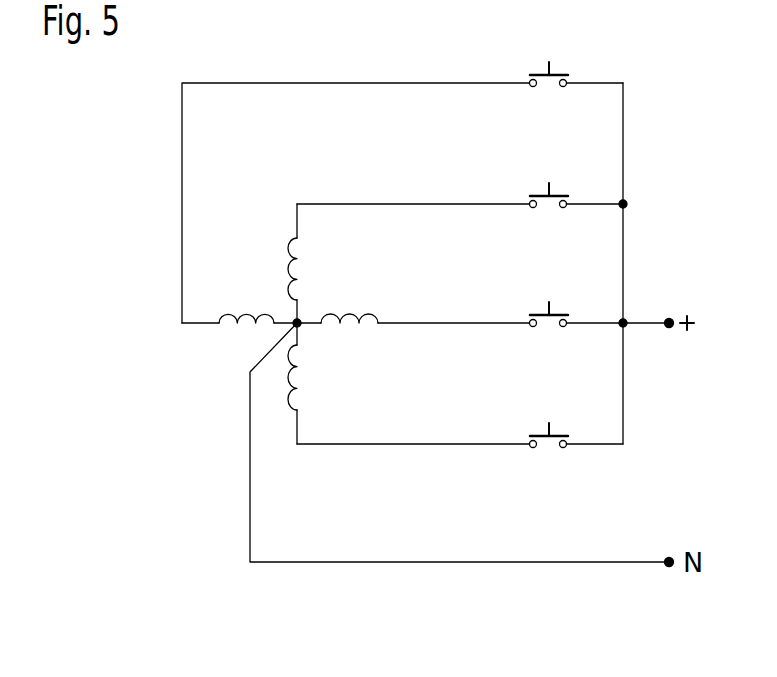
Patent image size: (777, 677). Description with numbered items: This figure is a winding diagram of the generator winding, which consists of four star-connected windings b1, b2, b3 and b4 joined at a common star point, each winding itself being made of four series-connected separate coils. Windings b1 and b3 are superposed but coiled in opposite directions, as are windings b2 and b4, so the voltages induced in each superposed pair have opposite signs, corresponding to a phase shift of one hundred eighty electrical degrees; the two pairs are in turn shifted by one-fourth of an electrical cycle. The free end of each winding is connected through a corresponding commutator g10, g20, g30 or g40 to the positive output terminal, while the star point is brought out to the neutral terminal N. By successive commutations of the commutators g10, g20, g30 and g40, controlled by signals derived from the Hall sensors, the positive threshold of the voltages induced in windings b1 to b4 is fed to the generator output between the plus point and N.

The commutator g10 is at (577, 56).
The commutator g20 is at (577, 180).
The commutator g30 is at (577, 298).
The commutator g40 is at (577, 420).
The star-connected winding b1 is at (246, 304).
The star-connected winding b2 is at (310, 269).
The star-connected winding b3 is at (349, 304).
The star-connected winding b4 is at (310, 377).